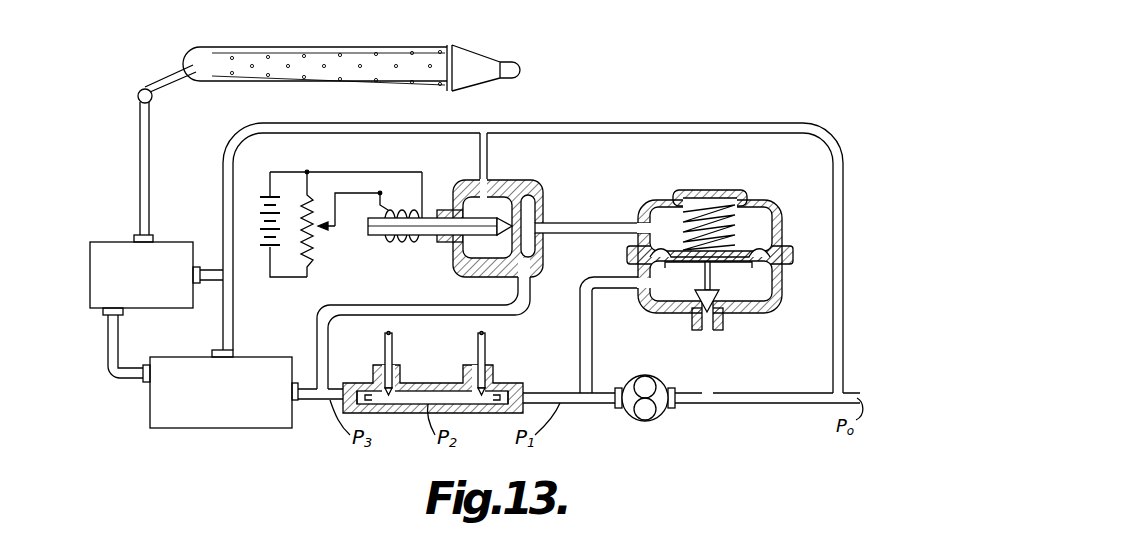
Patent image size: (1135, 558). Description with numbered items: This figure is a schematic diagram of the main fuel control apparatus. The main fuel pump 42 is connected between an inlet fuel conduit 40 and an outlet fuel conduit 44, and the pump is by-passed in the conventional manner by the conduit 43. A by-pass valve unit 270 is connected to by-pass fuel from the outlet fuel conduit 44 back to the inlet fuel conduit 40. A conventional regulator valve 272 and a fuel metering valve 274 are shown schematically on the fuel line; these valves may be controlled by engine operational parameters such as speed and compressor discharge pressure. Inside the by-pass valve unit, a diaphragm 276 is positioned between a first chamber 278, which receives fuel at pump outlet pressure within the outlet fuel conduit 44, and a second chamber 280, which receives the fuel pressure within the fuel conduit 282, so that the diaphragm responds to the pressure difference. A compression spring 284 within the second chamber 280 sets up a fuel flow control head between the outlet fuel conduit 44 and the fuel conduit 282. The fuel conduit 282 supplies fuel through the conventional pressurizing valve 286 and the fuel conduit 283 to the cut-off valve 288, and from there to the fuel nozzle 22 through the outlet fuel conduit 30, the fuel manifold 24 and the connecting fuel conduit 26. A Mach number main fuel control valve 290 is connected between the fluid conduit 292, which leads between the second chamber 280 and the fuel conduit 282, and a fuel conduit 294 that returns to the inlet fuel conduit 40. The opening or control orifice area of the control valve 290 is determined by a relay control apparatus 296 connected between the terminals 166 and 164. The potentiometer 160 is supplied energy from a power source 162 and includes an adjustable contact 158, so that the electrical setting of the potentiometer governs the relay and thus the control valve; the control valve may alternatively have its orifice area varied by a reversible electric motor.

The fuel nozzle 22 is at (232, 58).
The fuel manifold 24 is at (151, 98).
The fuel conduit 26 is at (183, 72).
The outlet fuel conduit 30 is at (150, 150).
The inlet fuel conduit 40 is at (726, 405).
The main fuel pump 42 is at (645, 416).
The by-pass conduit 43 is at (834, 150).
The outlet fuel conduit 44 is at (604, 404).
The adjustable contact 158 is at (335, 227).
The potentiometer 160 is at (309, 207).
The power source 162 is at (262, 250).
The terminal 164 is at (395, 152).
The terminal 166 is at (422, 176).
The by-pass valve unit 270 is at (673, 318).
The regulator valve 272 is at (487, 346).
The fuel metering valve 274 is at (394, 346).
The diaphragm 276 is at (651, 210).
The first chamber 278 is at (748, 300).
The second chamber 280 is at (760, 215).
The fuel conduit 282 is at (305, 400).
The fuel conduit 283 is at (113, 373).
The compression spring 284 is at (750, 194).
The pressurizing valve 286 is at (182, 420).
The cut-off valve 288 is at (150, 313).
The Mach number main fuel control valve 290 is at (491, 224).
The fluid conduit 292 is at (428, 313).
The fuel conduit 294 is at (594, 130).
The relay control apparatus 296 is at (392, 241).